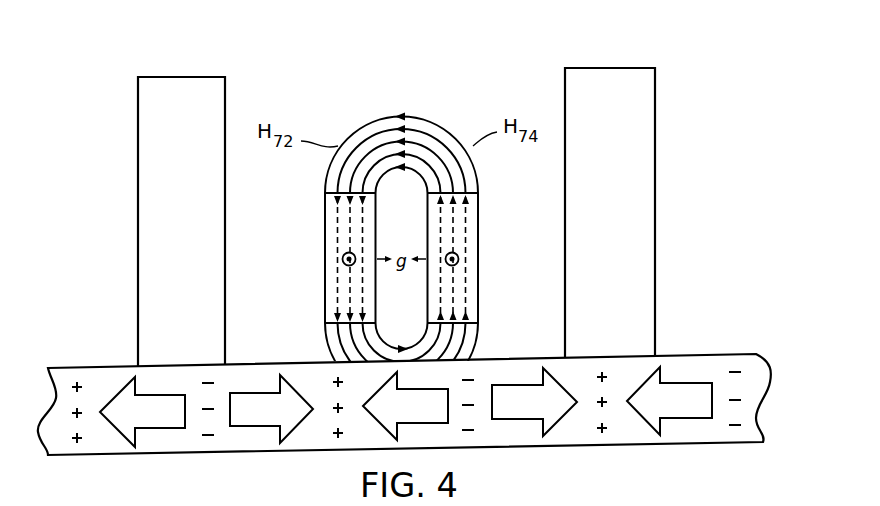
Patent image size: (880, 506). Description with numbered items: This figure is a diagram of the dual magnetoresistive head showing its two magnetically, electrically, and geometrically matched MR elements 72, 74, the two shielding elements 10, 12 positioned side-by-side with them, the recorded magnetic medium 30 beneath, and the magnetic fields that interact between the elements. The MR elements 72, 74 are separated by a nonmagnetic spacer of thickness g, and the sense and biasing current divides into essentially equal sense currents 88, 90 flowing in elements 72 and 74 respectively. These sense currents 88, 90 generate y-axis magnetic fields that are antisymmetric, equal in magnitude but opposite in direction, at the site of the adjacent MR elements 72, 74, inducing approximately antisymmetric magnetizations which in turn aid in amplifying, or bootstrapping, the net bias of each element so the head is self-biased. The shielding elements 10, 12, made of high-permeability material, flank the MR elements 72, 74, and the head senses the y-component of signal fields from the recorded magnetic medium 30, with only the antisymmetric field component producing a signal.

The shielding element 10 is at (168, 76).
The shielding element 12 is at (617, 66).
The recorded magnetic medium 30 is at (748, 353).
The MR element 72 is at (328, 215).
The MR element 74 is at (477, 206).
The sense current 88 is at (342, 258).
The sense current 90 is at (459, 256).